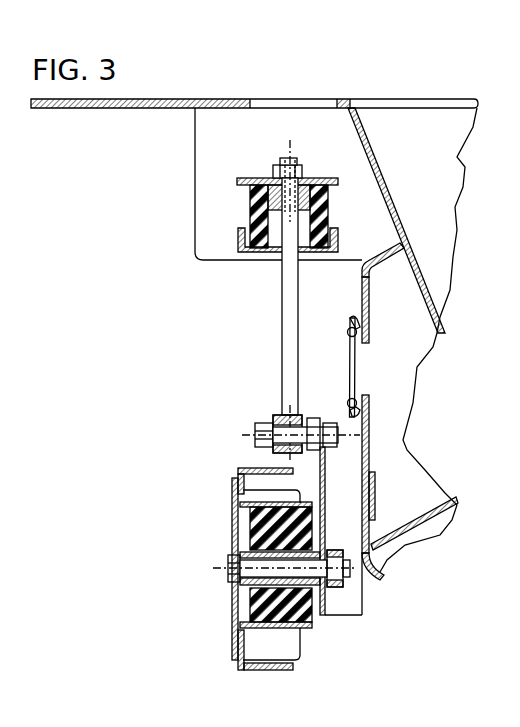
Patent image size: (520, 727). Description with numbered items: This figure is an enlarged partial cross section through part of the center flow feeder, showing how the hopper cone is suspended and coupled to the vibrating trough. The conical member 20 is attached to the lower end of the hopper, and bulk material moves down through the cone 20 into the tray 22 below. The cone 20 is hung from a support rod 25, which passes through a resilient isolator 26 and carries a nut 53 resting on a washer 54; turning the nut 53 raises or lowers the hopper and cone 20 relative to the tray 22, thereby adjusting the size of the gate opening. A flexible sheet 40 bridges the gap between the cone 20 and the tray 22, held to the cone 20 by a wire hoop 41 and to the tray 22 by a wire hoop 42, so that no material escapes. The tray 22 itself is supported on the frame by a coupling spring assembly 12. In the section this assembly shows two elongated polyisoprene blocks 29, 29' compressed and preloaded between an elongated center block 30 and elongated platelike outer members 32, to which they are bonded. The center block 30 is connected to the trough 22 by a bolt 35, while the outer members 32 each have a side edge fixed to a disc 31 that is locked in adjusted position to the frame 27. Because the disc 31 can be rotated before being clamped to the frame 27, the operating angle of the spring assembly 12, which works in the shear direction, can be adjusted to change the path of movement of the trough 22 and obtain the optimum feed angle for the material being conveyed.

The spring assembly 12 is at (229, 508).
The conical member 20 is at (397, 214).
The tray 22 is at (370, 462).
The support rod 25 is at (280, 162).
The resilient isolator 26 is at (250, 208).
The frame 27 is at (292, 663).
The polyisoprene block 29 is at (232, 617).
The polyisoprene block 29' is at (232, 531).
The center block 30 is at (238, 588).
The disc 31 is at (235, 648).
The outer member 32 is at (303, 502).
The bolt 35 is at (230, 573).
The flexible sheet 40 is at (349, 366).
The wire hoop 41 is at (347, 332).
The wire hoop 42 is at (347, 403).
The nut 53 is at (302, 165).
The washer 54 is at (328, 178).